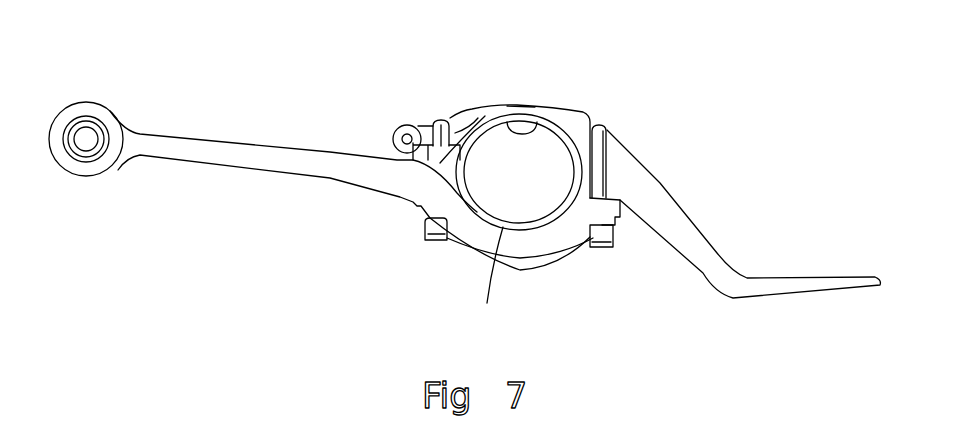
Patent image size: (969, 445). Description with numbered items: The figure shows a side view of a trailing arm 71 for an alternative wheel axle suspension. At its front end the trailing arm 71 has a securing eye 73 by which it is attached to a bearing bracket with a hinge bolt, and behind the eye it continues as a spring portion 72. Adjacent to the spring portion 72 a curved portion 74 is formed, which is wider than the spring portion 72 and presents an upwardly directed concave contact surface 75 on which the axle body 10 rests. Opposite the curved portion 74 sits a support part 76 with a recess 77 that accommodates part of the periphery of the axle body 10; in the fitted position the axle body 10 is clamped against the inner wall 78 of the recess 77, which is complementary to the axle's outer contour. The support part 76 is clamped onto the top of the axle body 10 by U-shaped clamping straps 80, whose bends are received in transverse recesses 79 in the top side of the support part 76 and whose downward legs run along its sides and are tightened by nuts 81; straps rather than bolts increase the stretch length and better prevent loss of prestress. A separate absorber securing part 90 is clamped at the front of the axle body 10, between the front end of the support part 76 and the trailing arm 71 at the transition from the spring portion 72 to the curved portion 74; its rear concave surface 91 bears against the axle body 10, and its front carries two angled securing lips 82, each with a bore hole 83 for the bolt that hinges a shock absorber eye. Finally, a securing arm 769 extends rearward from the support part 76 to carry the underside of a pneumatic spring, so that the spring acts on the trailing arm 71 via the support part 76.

The axle body 10 is at (500, 283).
The trailing arm 71 is at (352, 198).
The spring portion 72 is at (184, 143).
The securing eye 73 is at (78, 173).
The curved portion 74 is at (548, 242).
The concave contact surface 75 is at (523, 235).
The support part 76 is at (581, 110).
The recess 77 is at (538, 136).
The inner wall 78 is at (521, 107).
The recesses 79 is at (448, 112).
The U-shaped clamping straps 80 is at (436, 110).
The nuts 81 is at (425, 240).
The securing lips 82 is at (408, 122).
The bore hole 83 is at (394, 138).
The absorber securing part 90 is at (463, 127).
The rear concave surface 91 is at (518, 117).
The securing arm 769 is at (690, 223).